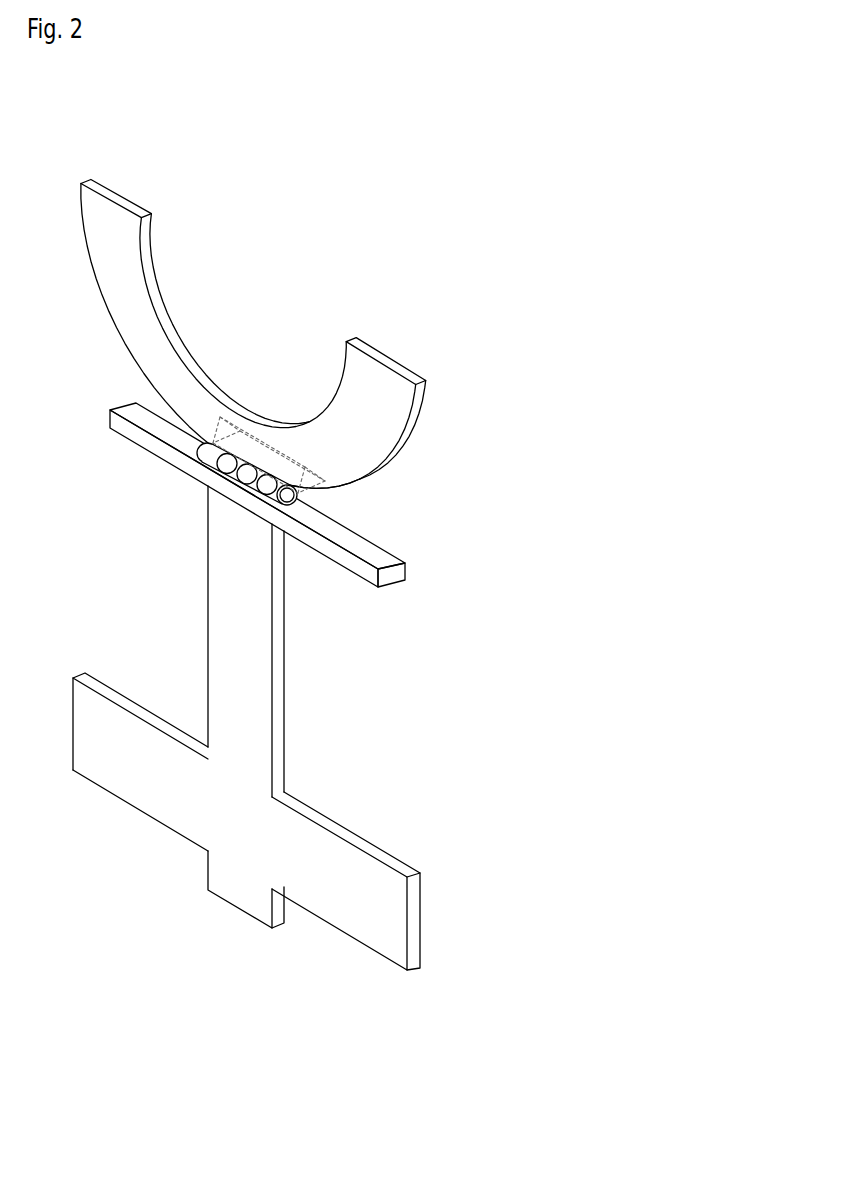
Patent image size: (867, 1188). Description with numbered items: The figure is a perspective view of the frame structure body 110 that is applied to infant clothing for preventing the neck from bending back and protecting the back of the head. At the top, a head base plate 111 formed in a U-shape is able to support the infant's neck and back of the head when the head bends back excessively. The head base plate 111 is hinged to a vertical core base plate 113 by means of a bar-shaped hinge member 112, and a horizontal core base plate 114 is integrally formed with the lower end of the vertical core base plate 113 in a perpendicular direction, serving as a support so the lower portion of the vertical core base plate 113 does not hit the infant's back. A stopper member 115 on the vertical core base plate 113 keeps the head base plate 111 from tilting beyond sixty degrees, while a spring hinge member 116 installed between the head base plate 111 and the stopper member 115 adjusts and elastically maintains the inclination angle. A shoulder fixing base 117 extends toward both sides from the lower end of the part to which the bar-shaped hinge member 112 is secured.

The frame structure body 110 is at (447, 248).
The head base plate 111 is at (133, 206).
The bar-shaped hinge member 112 is at (208, 466).
The vertical core base plate 113 is at (278, 660).
The horizontal core base plate 114 is at (103, 770).
The stopper member 115 is at (340, 490).
The spring hinge member 116 is at (232, 420).
The shoulder fixing base 117 is at (117, 408).